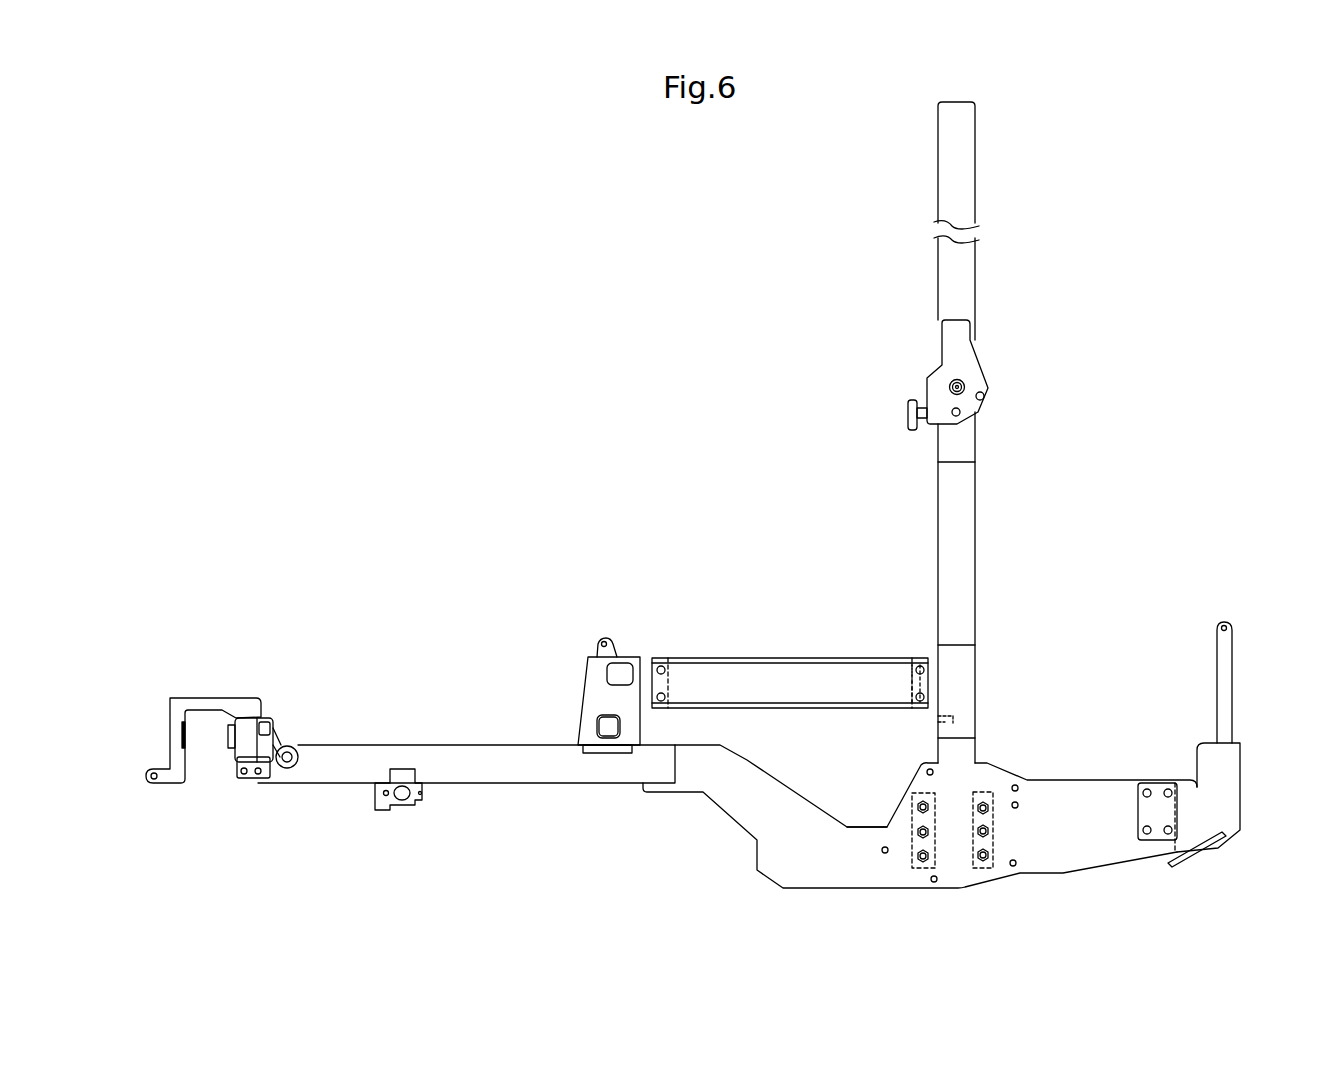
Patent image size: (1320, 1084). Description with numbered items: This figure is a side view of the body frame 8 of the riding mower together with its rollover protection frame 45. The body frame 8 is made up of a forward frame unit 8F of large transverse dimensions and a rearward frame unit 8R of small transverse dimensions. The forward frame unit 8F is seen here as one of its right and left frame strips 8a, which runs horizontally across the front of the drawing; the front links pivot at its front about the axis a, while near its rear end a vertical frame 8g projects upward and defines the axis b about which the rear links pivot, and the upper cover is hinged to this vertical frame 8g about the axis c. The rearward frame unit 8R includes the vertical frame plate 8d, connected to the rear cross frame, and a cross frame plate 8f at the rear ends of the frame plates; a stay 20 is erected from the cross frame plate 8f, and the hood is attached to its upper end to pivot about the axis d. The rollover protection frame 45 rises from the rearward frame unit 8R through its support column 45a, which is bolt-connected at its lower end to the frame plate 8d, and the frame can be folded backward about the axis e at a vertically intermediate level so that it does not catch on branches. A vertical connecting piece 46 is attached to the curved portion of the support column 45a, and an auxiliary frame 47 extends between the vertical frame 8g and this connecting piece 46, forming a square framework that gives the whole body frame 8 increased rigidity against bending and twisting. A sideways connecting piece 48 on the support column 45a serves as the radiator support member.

The body frame 8 is at (437, 612).
The forward frame unit 8F is at (428, 735).
The rearward frame unit 8R is at (1053, 775).
The frame strip 8a is at (476, 786).
The vertical frame plate 8d is at (868, 826).
The cross frame plate 8f is at (1200, 835).
The vertical frame 8g is at (585, 703).
The stay 20 is at (1217, 684).
The rollover protection frame 45 is at (977, 178).
The support column 45a is at (976, 517).
The vertical connecting piece 46 is at (910, 683).
The auxiliary frame 47 is at (775, 658).
The sideways connecting piece 48 is at (950, 717).
The axis a is at (288, 768).
The axis b is at (608, 740).
The axis c is at (601, 640).
The axis d is at (1222, 622).
The axis e is at (964, 384).